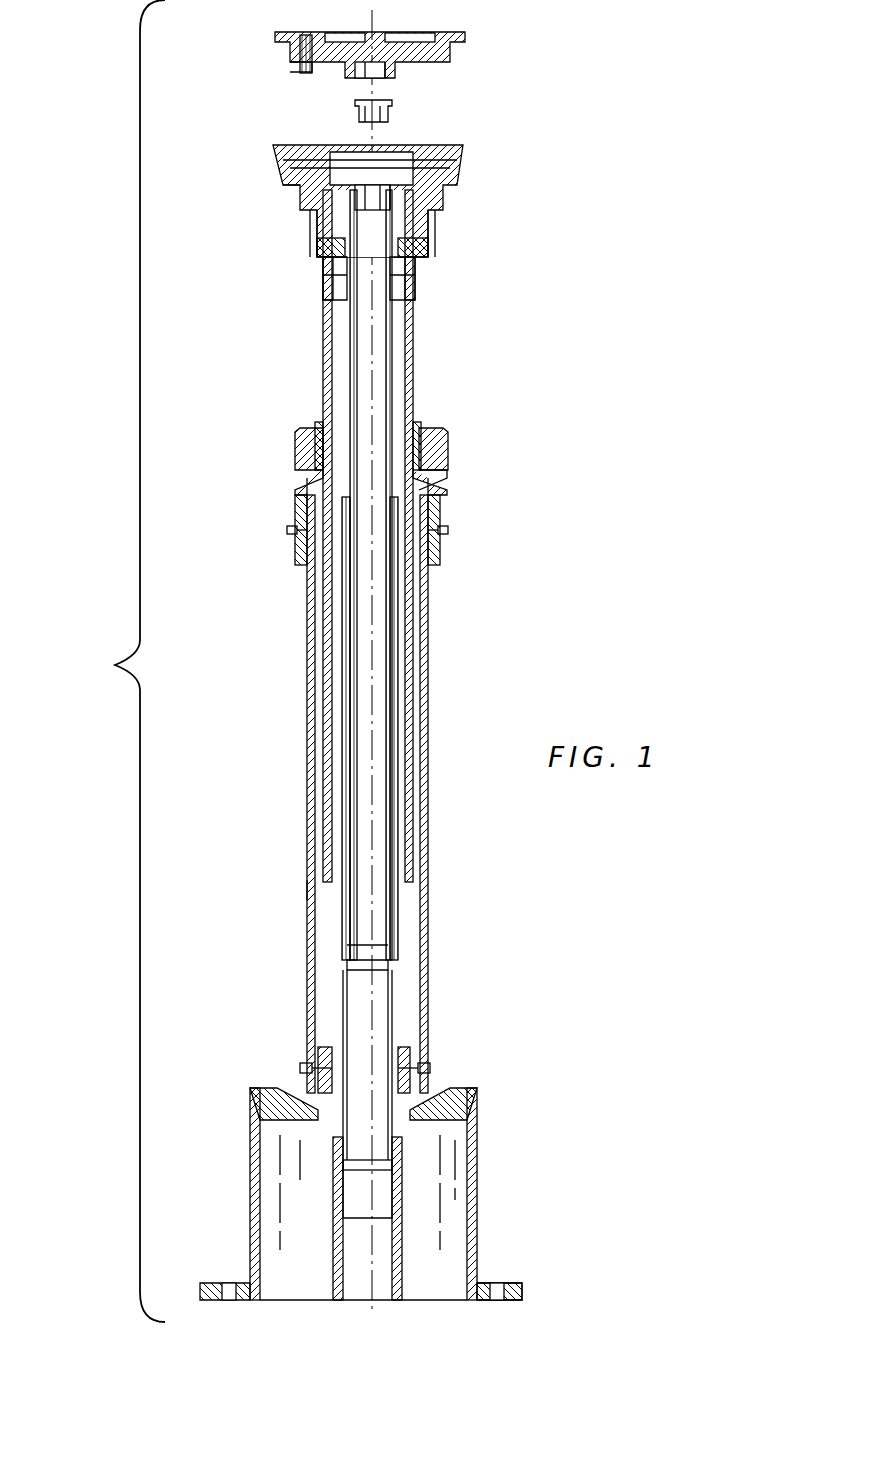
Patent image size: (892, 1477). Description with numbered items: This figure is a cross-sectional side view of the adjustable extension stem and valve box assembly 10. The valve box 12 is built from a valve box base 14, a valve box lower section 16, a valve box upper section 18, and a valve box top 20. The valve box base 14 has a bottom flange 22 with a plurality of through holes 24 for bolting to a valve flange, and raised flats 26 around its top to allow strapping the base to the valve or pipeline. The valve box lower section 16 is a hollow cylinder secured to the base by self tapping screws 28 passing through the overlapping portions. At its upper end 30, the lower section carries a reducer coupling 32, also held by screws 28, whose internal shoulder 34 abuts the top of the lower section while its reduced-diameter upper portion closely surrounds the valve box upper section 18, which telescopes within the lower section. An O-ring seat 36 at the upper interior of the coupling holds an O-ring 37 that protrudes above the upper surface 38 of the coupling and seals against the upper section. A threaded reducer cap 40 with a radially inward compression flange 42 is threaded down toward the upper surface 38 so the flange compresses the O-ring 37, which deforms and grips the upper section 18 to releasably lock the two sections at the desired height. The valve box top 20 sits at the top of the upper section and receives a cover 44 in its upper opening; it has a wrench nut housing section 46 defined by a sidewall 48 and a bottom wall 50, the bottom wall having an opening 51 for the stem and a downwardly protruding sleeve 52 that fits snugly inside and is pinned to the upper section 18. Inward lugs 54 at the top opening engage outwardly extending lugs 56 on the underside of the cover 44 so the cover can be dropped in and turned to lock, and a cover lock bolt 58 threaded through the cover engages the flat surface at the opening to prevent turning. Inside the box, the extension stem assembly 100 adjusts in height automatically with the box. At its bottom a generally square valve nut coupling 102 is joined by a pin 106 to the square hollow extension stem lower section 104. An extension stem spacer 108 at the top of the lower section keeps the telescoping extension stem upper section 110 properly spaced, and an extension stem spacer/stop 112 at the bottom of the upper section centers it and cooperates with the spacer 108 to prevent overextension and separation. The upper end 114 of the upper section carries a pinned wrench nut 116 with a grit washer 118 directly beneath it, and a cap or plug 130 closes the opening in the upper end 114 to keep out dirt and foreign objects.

The adjustable extension stem and valve box assembly 10 is at (125, 582).
The valve box 12 is at (298, 760).
The valve box base 14 is at (252, 1140).
The valve box lower section 16 is at (307, 665).
The valve box upper section 18 is at (415, 340).
The valve box top 20 is at (463, 160).
The bottom flange 22 is at (500, 1283).
The through holes 24 is at (230, 1300).
The raised flats 26 is at (290, 1065).
The self tapping screws 28 is at (448, 530).
The upper end 30 is at (438, 578).
The reducer coupling 32 is at (298, 560).
The internal shoulder 34 is at (300, 488).
The O-ring seat 36 is at (445, 458).
The O-ring 37 is at (318, 425).
The upper surface 38 is at (300, 428).
The reducer cap 40 is at (445, 440).
The compression flange 42 is at (425, 425).
The cover 44 is at (462, 38).
The wrench nut housing section 46 is at (325, 205).
The sidewall 48 is at (430, 240).
The bottom wall 50 is at (430, 265).
The opening 51 is at (335, 295).
The sleeve 52 is at (320, 250).
The lugs 54 is at (455, 150).
The outwardly extending lugs 56 is at (300, 58).
The cover lock bolt 58 is at (290, 72).
The extension stem assembly 100 is at (395, 1000).
The valve nut coupling 102 is at (333, 1290).
The extension stem lower section 104 is at (312, 920).
The pin 106 is at (402, 1165).
The extension stem spacer 108 is at (398, 560).
The extension stem upper section 110 is at (392, 388).
The extension stem spacer/stop 112 is at (398, 945).
The upper end 114 is at (378, 185).
The wrench nut 116 is at (330, 175).
The grit washer 118 is at (400, 180).
The cap or plug 130 is at (355, 106).